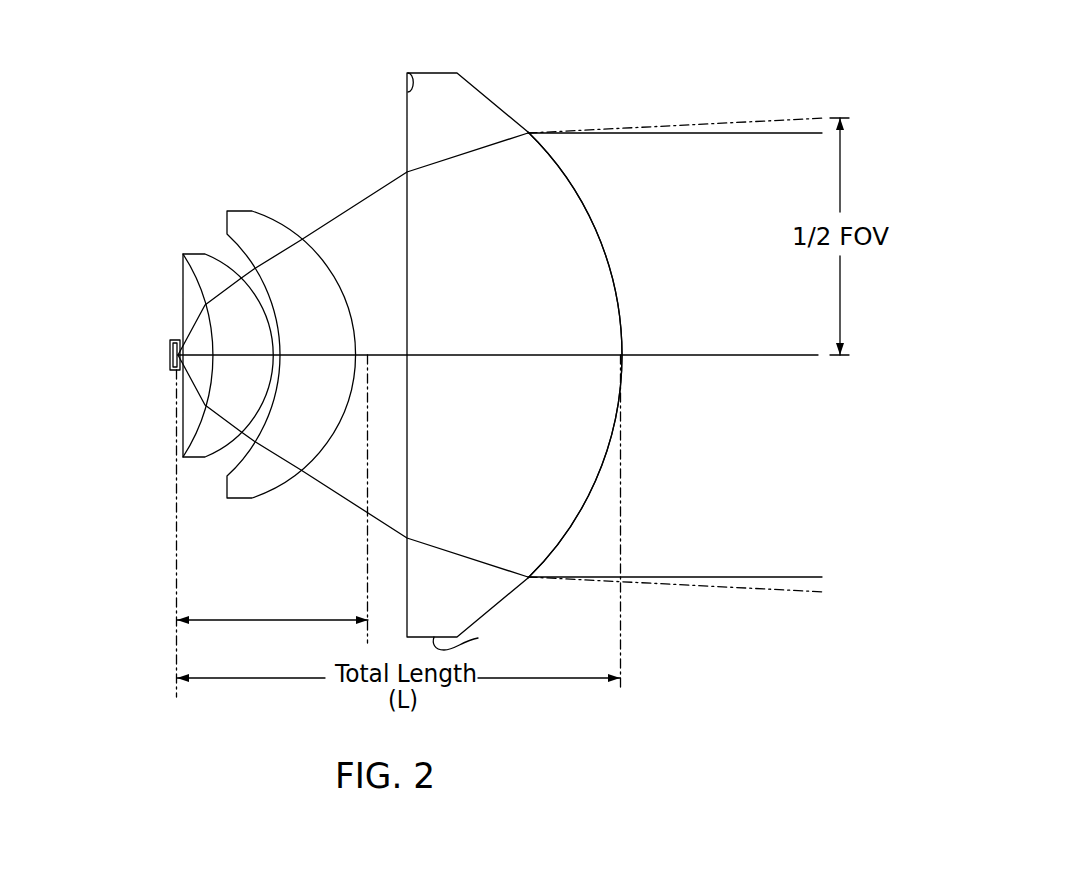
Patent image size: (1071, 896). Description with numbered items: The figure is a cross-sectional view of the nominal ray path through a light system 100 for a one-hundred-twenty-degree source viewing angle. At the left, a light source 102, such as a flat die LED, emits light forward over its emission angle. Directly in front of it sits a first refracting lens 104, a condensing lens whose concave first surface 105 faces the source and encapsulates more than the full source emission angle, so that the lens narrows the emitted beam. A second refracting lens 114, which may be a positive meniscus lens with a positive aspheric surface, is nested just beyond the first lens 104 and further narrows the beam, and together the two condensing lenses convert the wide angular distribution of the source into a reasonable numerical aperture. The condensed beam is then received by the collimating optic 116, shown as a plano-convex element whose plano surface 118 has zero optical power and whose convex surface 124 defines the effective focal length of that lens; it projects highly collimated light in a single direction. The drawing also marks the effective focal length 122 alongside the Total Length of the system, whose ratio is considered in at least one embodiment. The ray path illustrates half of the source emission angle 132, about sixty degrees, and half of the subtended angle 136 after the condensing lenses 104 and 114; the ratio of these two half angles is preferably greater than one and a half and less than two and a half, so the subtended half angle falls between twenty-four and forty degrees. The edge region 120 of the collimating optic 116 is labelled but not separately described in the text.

The light system 100 is at (190, 45).
The light source 102 is at (171, 356).
The first refracting lens 104 is at (164, 349).
The first surface 105 is at (196, 427).
The second refracting lens 114 is at (243, 217).
The collimating optic 116 is at (550, 332).
The plano surface 118 is at (409, 73).
The lower edge of third lens element 120 is at (478, 638).
The effective focal length 122 is at (177, 620).
The convex surface 124 is at (604, 460).
The half emission angle 132 is at (223, 355).
The half subtended angle 136 is at (347, 207).